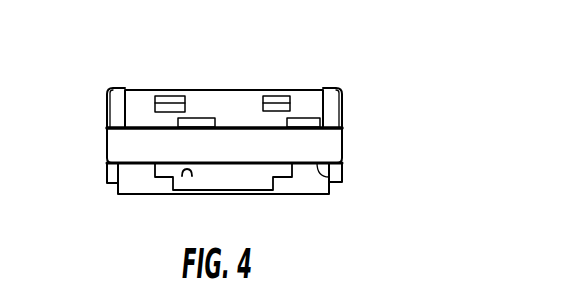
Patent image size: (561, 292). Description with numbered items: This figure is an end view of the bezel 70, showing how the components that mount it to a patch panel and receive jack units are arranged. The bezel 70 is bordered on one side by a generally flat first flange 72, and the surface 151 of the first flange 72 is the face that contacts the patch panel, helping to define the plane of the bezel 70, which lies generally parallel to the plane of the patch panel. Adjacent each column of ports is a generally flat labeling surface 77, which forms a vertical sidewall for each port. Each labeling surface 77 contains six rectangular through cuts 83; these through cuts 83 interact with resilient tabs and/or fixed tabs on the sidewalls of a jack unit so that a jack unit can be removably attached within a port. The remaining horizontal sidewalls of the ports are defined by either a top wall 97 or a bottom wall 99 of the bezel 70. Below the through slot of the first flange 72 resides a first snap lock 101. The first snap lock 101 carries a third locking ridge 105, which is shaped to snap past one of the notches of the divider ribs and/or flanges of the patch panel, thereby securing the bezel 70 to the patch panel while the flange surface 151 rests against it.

The bezel 70 is at (114, 72).
The first flange 72 is at (228, 156).
The labeling surface 77 is at (252, 113).
The rectangular through cuts 83 is at (197, 118).
The top wall 97 is at (112, 102).
The bottom wall 99 is at (333, 112).
The first snap lock 101 is at (253, 183).
The third locking ridge 105 is at (188, 172).
The surface 151 is at (343, 178).